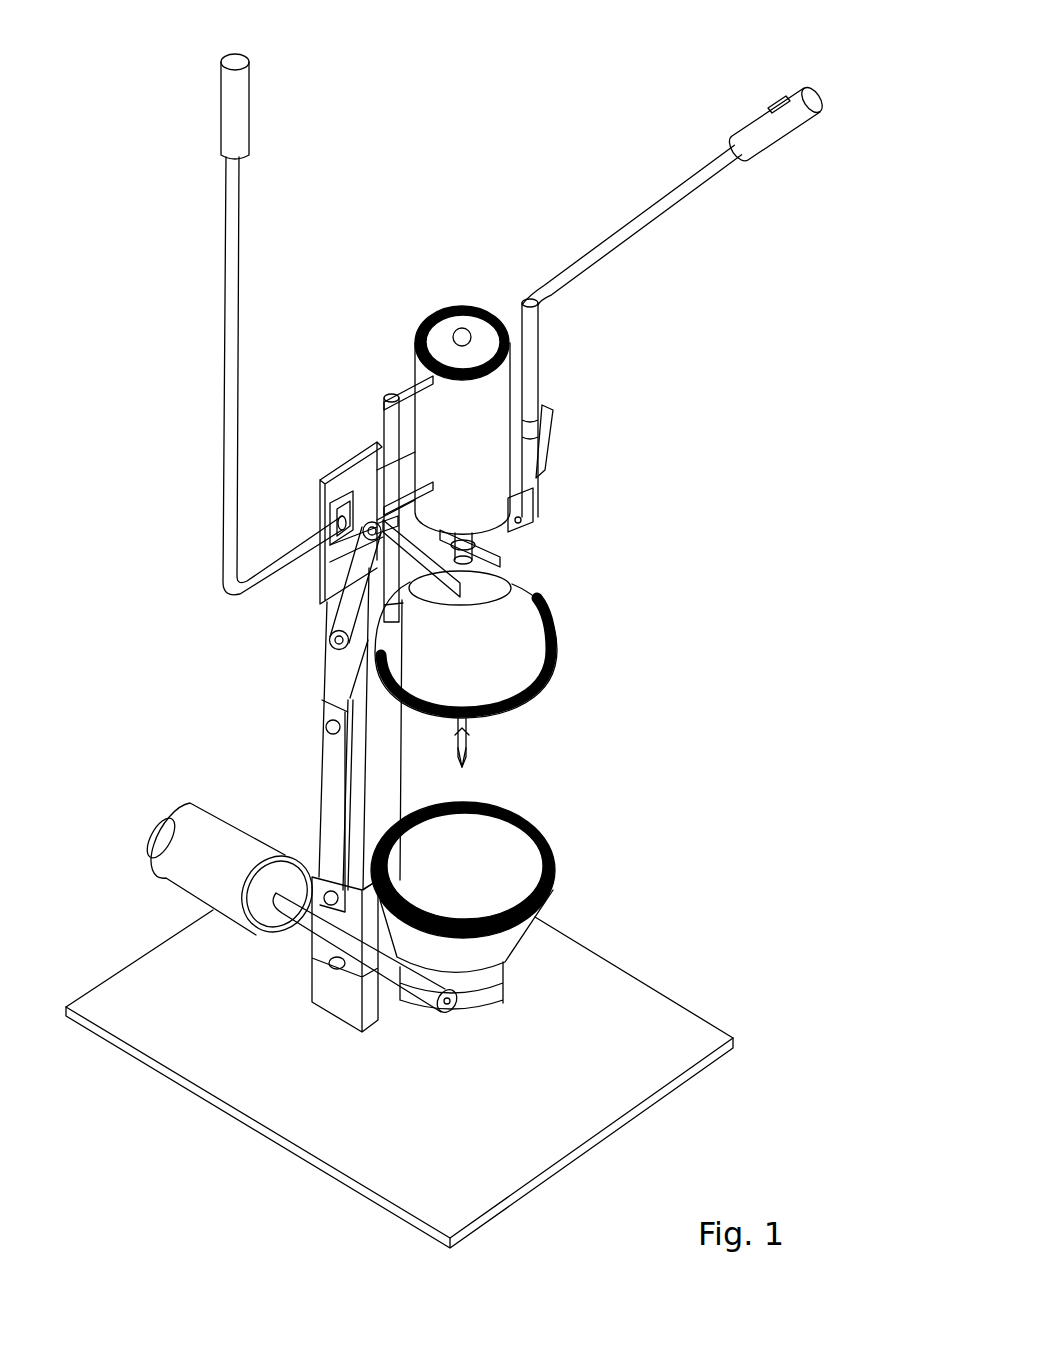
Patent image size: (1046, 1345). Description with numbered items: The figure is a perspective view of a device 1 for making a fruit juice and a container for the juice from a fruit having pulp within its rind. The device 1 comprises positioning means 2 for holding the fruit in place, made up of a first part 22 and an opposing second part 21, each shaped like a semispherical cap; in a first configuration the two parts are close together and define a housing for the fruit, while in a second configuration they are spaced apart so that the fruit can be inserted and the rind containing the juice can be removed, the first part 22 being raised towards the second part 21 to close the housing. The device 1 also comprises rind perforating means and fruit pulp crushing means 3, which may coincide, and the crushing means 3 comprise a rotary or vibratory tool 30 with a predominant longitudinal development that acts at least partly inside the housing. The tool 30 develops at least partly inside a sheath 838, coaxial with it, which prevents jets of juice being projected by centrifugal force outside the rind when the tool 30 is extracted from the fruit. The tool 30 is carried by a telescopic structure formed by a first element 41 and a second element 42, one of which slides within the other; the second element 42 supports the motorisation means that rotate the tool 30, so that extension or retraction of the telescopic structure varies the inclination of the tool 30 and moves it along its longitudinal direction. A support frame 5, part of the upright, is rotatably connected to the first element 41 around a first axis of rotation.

The device 1 is at (446, 635).
The positioning means 2 is at (538, 785).
The second part 21 is at (558, 606).
The first part 22 is at (572, 880).
The rind perforating means and fruit pulp crushing means 3 is at (489, 735).
The rotary or vibratory tool 30 is at (480, 749).
The support frame 5 is at (421, 771).
The first element 41 is at (406, 598).
The second element 42 is at (372, 428).
The sheath 838 is at (486, 541).